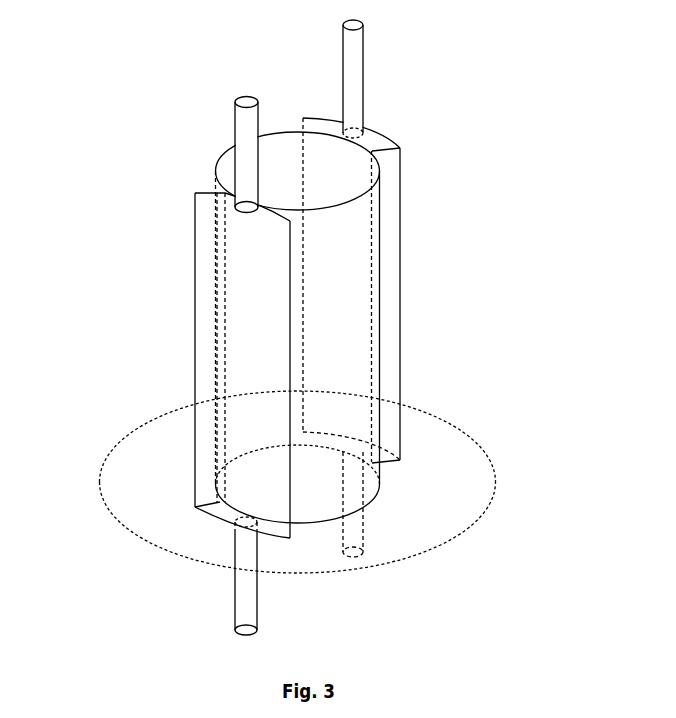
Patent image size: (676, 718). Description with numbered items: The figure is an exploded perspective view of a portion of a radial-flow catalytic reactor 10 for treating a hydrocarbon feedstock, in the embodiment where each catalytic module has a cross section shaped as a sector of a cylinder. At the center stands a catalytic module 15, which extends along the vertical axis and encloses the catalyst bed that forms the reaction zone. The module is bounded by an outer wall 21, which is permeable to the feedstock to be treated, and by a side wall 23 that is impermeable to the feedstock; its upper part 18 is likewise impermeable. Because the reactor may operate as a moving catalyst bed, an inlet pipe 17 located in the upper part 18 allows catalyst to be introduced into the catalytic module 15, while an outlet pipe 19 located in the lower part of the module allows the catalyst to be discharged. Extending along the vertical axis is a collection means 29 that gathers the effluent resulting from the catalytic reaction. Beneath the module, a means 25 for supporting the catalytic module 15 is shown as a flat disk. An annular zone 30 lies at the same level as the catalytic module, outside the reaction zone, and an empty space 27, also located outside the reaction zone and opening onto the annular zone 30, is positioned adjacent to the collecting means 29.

The catalytic reactor 10 is at (108, 53).
The catalytic module 15 is at (207, 212).
The inlet pipe 17 is at (233, 127).
The upper part 18 is at (367, 132).
The outlet pipe 19 is at (235, 598).
The outer wall 21 is at (225, 307).
The side wall 23 is at (390, 363).
The means for supporting the catalytic module 25 is at (138, 512).
The empty space 27 is at (392, 475).
The collection means 29 is at (318, 172).
The annular zone 30 is at (177, 397).